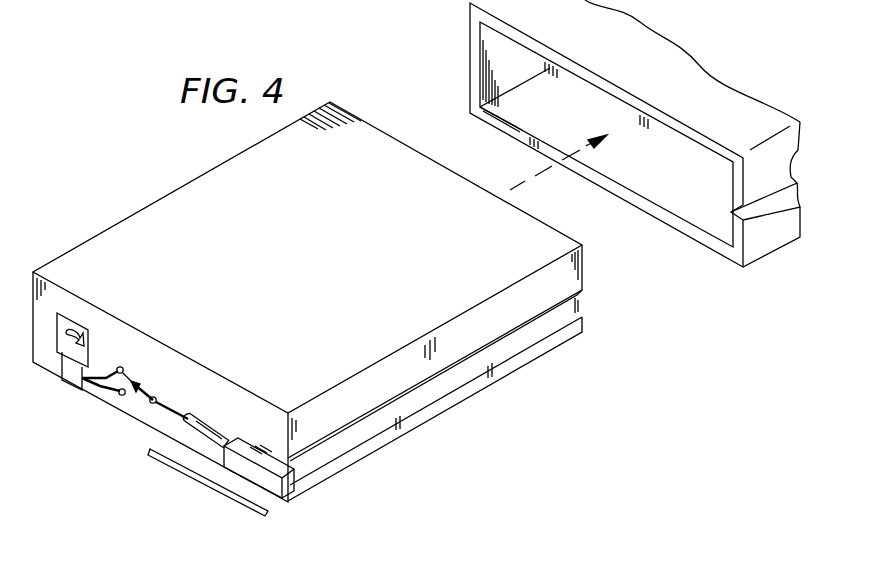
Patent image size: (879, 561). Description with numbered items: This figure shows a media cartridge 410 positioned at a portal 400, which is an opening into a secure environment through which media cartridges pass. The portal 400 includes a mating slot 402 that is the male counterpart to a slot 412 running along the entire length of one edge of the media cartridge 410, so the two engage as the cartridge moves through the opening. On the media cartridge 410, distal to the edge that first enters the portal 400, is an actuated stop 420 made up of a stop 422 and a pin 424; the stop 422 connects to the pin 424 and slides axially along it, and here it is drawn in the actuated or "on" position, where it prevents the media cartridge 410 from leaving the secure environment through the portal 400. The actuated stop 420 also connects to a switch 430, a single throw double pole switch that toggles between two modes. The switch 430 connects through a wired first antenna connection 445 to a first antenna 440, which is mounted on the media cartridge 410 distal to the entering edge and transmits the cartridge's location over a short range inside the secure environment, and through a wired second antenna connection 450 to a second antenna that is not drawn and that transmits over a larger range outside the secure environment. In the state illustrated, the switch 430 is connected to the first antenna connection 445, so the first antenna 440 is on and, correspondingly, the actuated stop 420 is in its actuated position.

The portal 400 is at (470, 57).
The mating slot 402 is at (722, 238).
The media cartridge 410 is at (138, 212).
The slot 412 is at (577, 309).
The actuated stop 420 is at (207, 487).
The stop 422 is at (286, 485).
The pin 424 is at (212, 436).
The switch 430 is at (147, 384).
The first antenna 440 is at (73, 317).
The first antenna connection 445 is at (110, 372).
The second antenna connection 450 is at (92, 392).